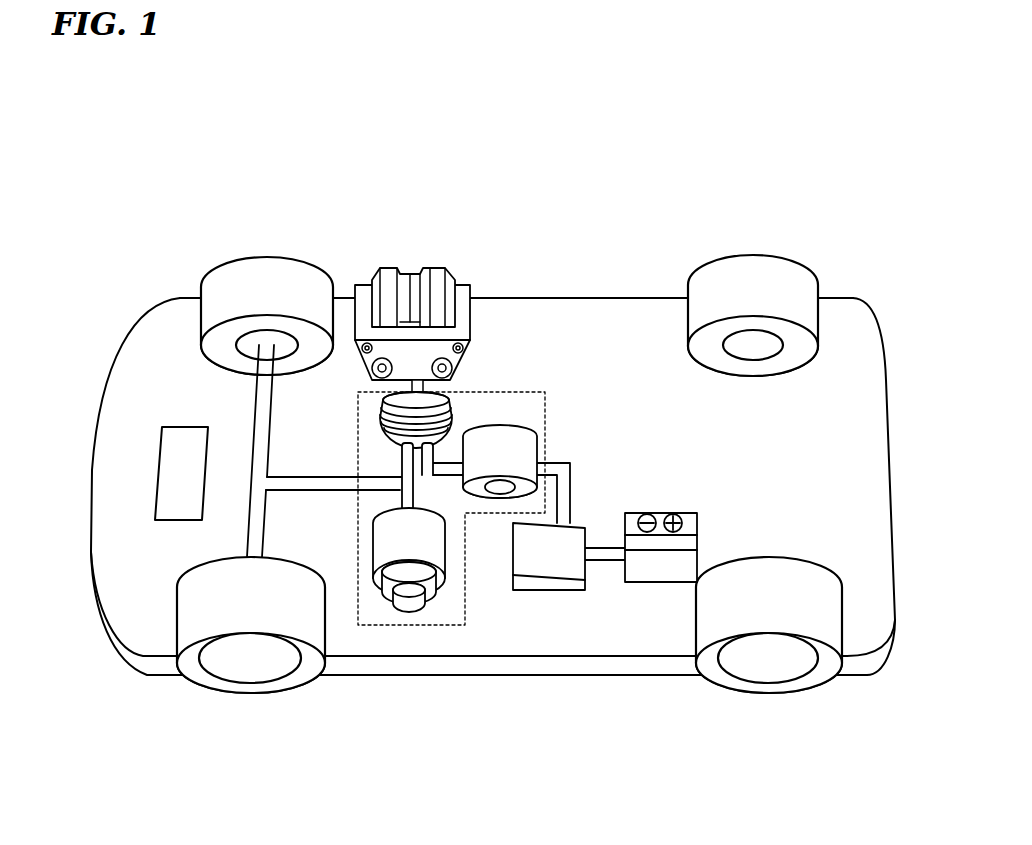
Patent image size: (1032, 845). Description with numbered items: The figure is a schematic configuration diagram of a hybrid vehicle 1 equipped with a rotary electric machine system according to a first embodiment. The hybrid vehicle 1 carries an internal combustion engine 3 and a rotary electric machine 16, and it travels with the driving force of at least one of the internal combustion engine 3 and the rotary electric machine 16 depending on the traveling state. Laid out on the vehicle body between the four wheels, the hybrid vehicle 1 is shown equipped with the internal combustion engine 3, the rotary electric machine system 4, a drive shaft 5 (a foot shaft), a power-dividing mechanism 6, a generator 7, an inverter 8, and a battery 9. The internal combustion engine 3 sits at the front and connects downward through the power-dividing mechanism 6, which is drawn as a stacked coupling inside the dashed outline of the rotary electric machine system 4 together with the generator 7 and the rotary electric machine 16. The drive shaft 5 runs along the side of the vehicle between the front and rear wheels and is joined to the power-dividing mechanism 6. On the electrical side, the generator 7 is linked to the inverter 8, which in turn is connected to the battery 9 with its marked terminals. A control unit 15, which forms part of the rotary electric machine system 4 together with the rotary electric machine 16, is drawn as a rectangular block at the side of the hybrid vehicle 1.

The hybrid vehicle 1 is at (653, 143).
The internal combustion engine 3 is at (414, 280).
The rotary electric machine system 4 is at (445, 610).
The drive shaft 5 is at (400, 468).
The power-dividing mechanism 6 is at (450, 420).
The generator 7 is at (515, 443).
The inverter 8 is at (547, 565).
The battery 9 is at (630, 515).
The control unit 15 is at (172, 453).
The rotary electric machine 16 is at (380, 553).